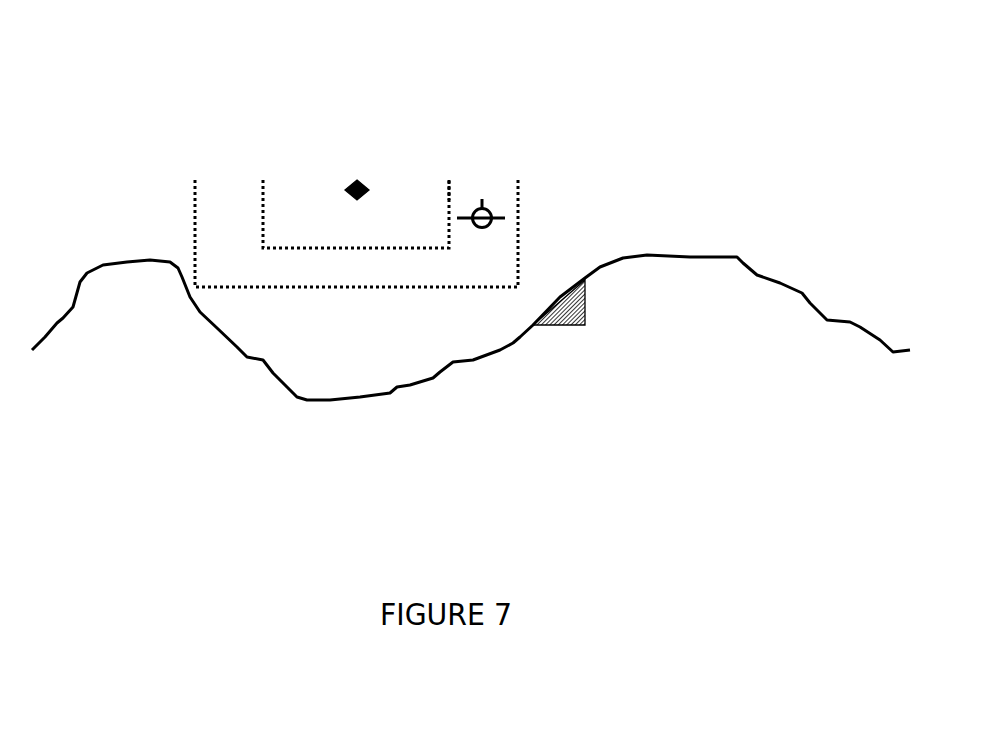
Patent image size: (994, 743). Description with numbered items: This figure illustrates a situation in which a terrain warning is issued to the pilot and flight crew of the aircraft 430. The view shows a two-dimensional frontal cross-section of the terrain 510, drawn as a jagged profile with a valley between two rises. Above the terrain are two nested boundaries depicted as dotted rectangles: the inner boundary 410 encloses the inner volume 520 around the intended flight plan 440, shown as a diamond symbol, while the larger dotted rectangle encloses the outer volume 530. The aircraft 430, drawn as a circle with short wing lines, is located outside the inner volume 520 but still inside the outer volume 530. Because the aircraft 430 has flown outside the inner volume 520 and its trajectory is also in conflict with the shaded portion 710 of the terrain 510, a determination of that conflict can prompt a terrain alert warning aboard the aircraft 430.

The terrain profile 510 is at (471, 285).
The shaded portion of terrain 710 is at (636, 329).
The outer volume 530 is at (303, 157).
The inner volume 520 is at (323, 166).
The intended flight plan 440 is at (323, 130).
The inner boundary 410 is at (481, 146).
The aircraft 430 is at (543, 141).